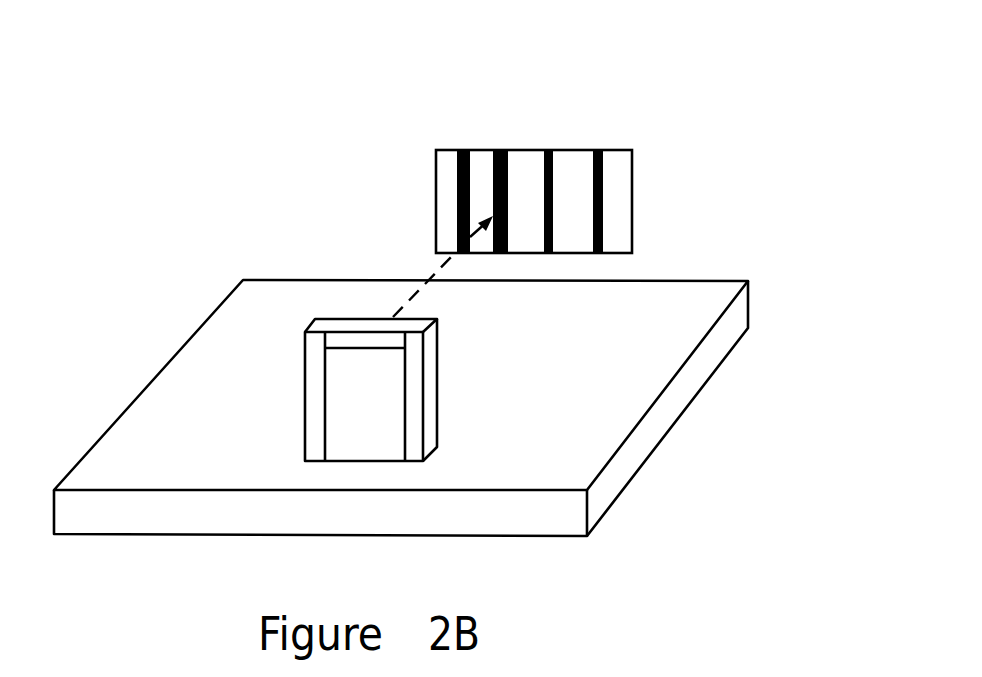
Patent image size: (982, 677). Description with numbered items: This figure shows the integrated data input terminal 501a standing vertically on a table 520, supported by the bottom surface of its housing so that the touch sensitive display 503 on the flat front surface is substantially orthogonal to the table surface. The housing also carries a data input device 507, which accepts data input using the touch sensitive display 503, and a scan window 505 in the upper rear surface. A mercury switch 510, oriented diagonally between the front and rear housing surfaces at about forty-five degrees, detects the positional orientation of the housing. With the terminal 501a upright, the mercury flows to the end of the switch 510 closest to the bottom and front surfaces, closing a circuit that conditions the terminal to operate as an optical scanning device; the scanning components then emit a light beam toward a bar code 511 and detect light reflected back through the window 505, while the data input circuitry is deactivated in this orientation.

The table 520 is at (728, 282).
The terminal 501a is at (425, 328).
The scan window 505 is at (365, 318).
The touch sensitive display 503 is at (320, 388).
The mercury switch 510 is at (430, 356).
The data input device 507 is at (388, 428).
The bar code 511 is at (603, 180).